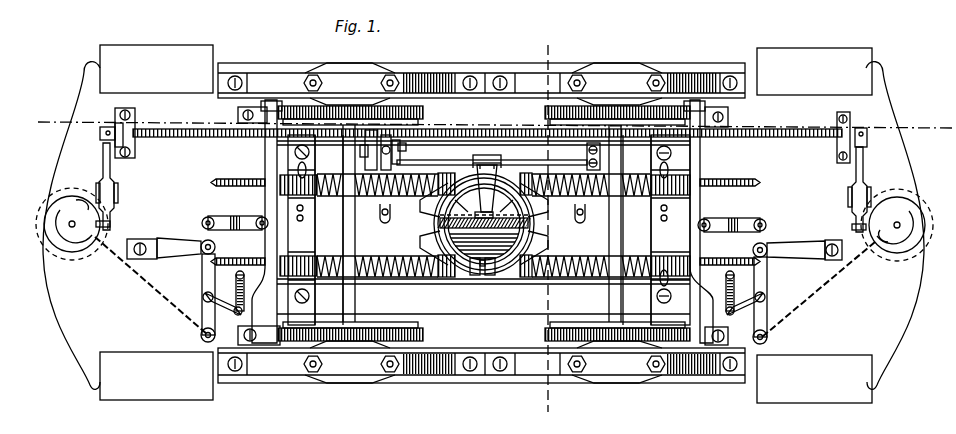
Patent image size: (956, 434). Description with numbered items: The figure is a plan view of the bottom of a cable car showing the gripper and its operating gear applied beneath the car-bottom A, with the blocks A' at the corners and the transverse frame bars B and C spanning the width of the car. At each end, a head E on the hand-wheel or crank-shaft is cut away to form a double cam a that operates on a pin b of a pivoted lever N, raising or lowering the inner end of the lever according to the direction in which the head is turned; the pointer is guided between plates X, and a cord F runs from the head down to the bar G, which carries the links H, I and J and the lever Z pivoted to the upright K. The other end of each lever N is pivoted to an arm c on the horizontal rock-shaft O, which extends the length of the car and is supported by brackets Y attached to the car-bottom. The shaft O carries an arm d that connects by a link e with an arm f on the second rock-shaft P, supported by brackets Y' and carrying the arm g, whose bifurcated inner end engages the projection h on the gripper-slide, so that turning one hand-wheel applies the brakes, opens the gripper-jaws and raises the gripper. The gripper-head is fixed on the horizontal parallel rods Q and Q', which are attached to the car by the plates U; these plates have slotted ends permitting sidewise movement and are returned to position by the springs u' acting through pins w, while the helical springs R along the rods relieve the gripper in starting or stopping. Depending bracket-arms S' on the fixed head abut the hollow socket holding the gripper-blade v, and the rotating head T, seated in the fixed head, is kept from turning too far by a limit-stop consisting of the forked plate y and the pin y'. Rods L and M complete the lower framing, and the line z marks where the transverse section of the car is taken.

The car-bottom A is at (483, 226).
The frame end blocks A' is at (486, 224).
The gear wheels B is at (410, 113).
The frame bar C is at (481, 362).
The head E is at (58, 224).
The cord F is at (112, 298).
The lever bar G is at (483, 299).
The link H is at (245, 293).
The link I is at (780, 304).
The connecting link J is at (246, 219).
The upright post K is at (265, 156).
The rod L is at (422, 285).
The cross bar M is at (483, 315).
The pivoted lever N is at (489, 187).
The rock-shaft O is at (487, 126).
The rock-shaft P is at (545, 160).
The horizontal parallel rod Q is at (481, 213).
The rod Q' is at (740, 179).
The helical spring R is at (538, 240).
The depending bracket-arm S' is at (482, 203).
The rotating gripper-head T is at (432, 240).
The plate U is at (343, 204).
The guide plates X is at (483, 194).
The bracket Y is at (494, 130).
The bracket Y' is at (583, 155).
The lever Z is at (484, 241).
The double cam a is at (78, 202).
The pin b is at (110, 223).
The arm c is at (483, 138).
The arm d is at (387, 150).
The link e is at (410, 143).
The arm f is at (408, 152).
The arm g is at (487, 174).
The projection h is at (476, 216).
The spring u' is at (649, 222).
The bar v is at (484, 229).
The pins w is at (316, 222).
The slotted or forked plate y is at (483, 207).
The pin y' is at (496, 279).
The section line z is at (547, 228).